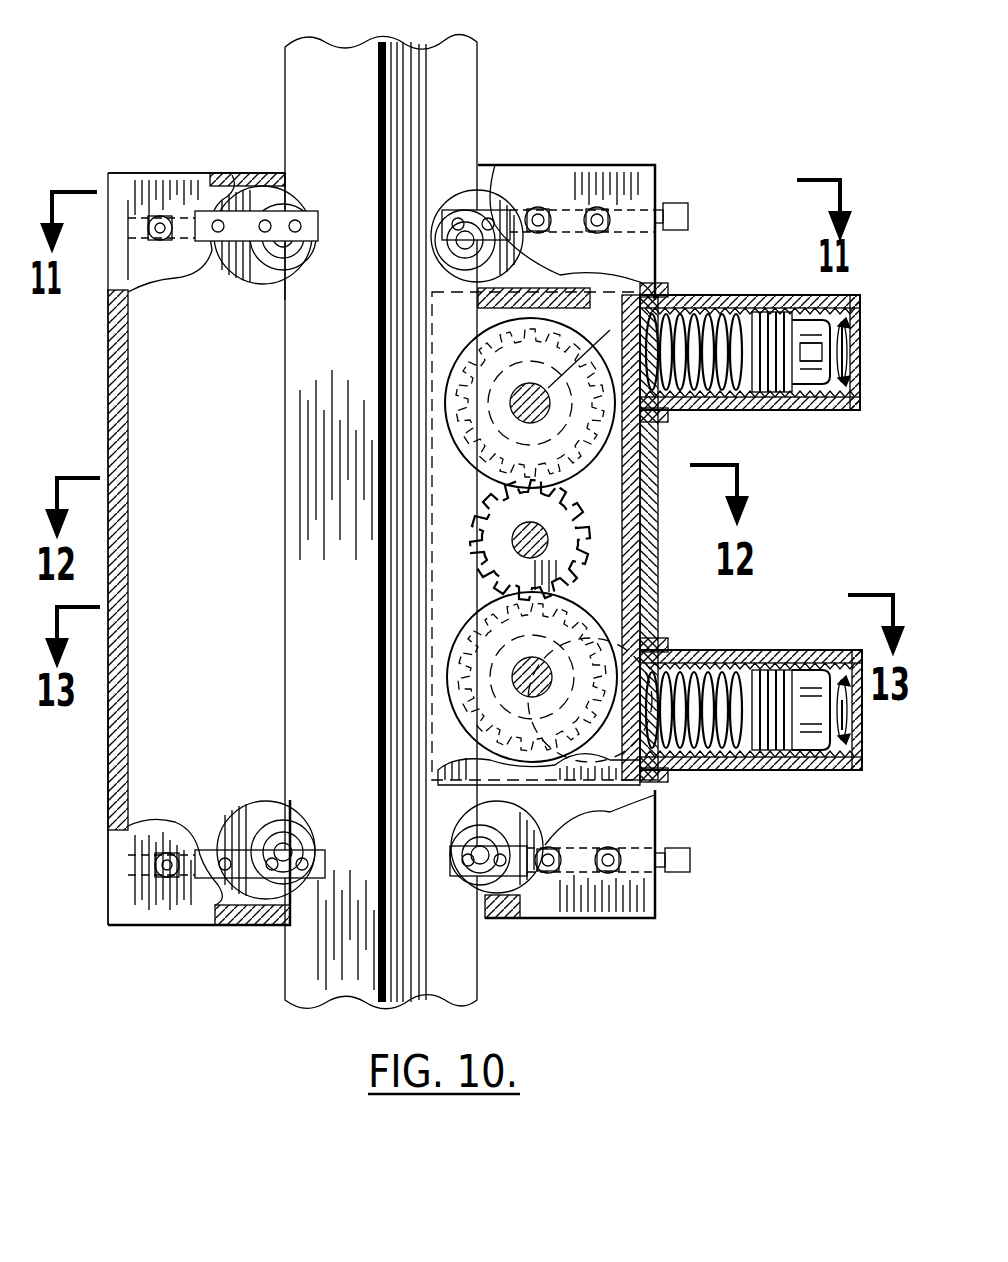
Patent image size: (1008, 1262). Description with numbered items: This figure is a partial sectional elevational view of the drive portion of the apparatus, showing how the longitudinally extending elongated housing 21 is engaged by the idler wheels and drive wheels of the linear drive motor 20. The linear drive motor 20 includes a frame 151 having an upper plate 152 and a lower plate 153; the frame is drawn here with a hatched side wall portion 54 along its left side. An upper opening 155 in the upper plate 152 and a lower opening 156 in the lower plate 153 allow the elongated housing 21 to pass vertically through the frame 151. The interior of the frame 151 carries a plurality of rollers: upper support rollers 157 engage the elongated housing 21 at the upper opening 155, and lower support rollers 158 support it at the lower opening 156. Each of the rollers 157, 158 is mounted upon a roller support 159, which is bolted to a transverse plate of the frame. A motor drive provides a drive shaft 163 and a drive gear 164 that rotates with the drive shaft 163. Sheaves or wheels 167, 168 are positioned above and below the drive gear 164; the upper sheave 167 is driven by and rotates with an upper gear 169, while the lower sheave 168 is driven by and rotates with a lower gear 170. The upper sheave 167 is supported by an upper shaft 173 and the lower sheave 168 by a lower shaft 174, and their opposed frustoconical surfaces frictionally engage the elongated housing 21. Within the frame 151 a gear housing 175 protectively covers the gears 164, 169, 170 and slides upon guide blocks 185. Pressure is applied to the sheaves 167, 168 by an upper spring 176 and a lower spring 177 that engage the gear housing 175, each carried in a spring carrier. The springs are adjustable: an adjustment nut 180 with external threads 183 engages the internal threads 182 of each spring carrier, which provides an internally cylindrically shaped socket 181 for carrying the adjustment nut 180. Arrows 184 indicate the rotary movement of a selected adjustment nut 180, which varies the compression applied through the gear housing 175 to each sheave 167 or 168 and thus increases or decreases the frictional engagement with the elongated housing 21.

The linear drive motor 20 is at (108, 388).
The elongated housing 21 is at (465, 62).
The plate lower portion 54 is at (108, 745).
The frame 151 is at (128, 755).
The upper plate 152 is at (245, 162).
The lower plate 153 is at (235, 925).
The upper opening 155 is at (277, 165).
The lower opening 156 is at (484, 918).
The upper support rollers 157 is at (265, 285).
The lower support rollers 158 is at (270, 808).
The roller support 159 is at (198, 240).
The drive shaft 163 is at (565, 514).
The drive gear 164 is at (545, 535).
The upper sheave 167 is at (455, 345).
The lower sheave 168 is at (440, 705).
The upper gear 169 is at (438, 410).
The lower gear 170 is at (645, 603).
The upper shaft 173 is at (670, 300).
The lower shaft 174 is at (515, 672).
The gear housing 175 is at (640, 285).
The upper spring 176 is at (740, 310).
The lower spring 177 is at (738, 655).
The adjustment nut 180 is at (845, 330).
The socket 181 is at (858, 355).
The internal threads 182 is at (858, 386).
The external threads 183 is at (825, 302).
The arrows 184 is at (820, 412).
The guide blocks 185 is at (548, 200).